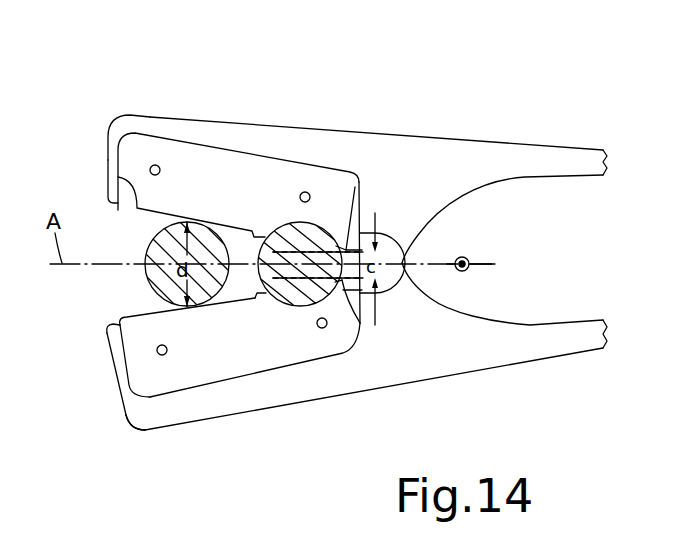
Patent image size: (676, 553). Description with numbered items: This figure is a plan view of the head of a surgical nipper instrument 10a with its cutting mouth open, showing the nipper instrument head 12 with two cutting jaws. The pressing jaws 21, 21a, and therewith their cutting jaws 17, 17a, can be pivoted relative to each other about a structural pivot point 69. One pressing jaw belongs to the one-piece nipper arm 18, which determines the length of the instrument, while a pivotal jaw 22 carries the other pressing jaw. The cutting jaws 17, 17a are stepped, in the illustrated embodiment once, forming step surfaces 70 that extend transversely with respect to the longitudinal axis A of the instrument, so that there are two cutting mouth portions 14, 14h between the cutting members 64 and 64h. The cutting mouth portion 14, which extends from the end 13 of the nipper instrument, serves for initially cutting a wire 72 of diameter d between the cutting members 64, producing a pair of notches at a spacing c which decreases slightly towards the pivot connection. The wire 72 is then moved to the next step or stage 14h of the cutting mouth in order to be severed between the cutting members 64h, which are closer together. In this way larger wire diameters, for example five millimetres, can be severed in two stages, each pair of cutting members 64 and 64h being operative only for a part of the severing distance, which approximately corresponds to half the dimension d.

The surgical nipper instrument 10a is at (124, 455).
The nipper instrument head 12 is at (162, 95).
The end of the nipper instrument 13 is at (100, 384).
The cutting mouth 14 is at (120, 303).
The cutting mouth portion 14h is at (253, 288).
The cutting jaw 17 is at (327, 347).
The cutting jaw 17a is at (277, 172).
The nipper arm 18 is at (543, 343).
The pressing jaw 21 is at (210, 402).
The pressing jaw 21a is at (236, 131).
The pivotal jaw 22 is at (458, 155).
The cutting member 64 is at (107, 184).
The cutting member 64h is at (362, 187).
The structural pivot point 69 is at (468, 270).
The step surface 70 is at (248, 237).
The wire 72 is at (158, 245).